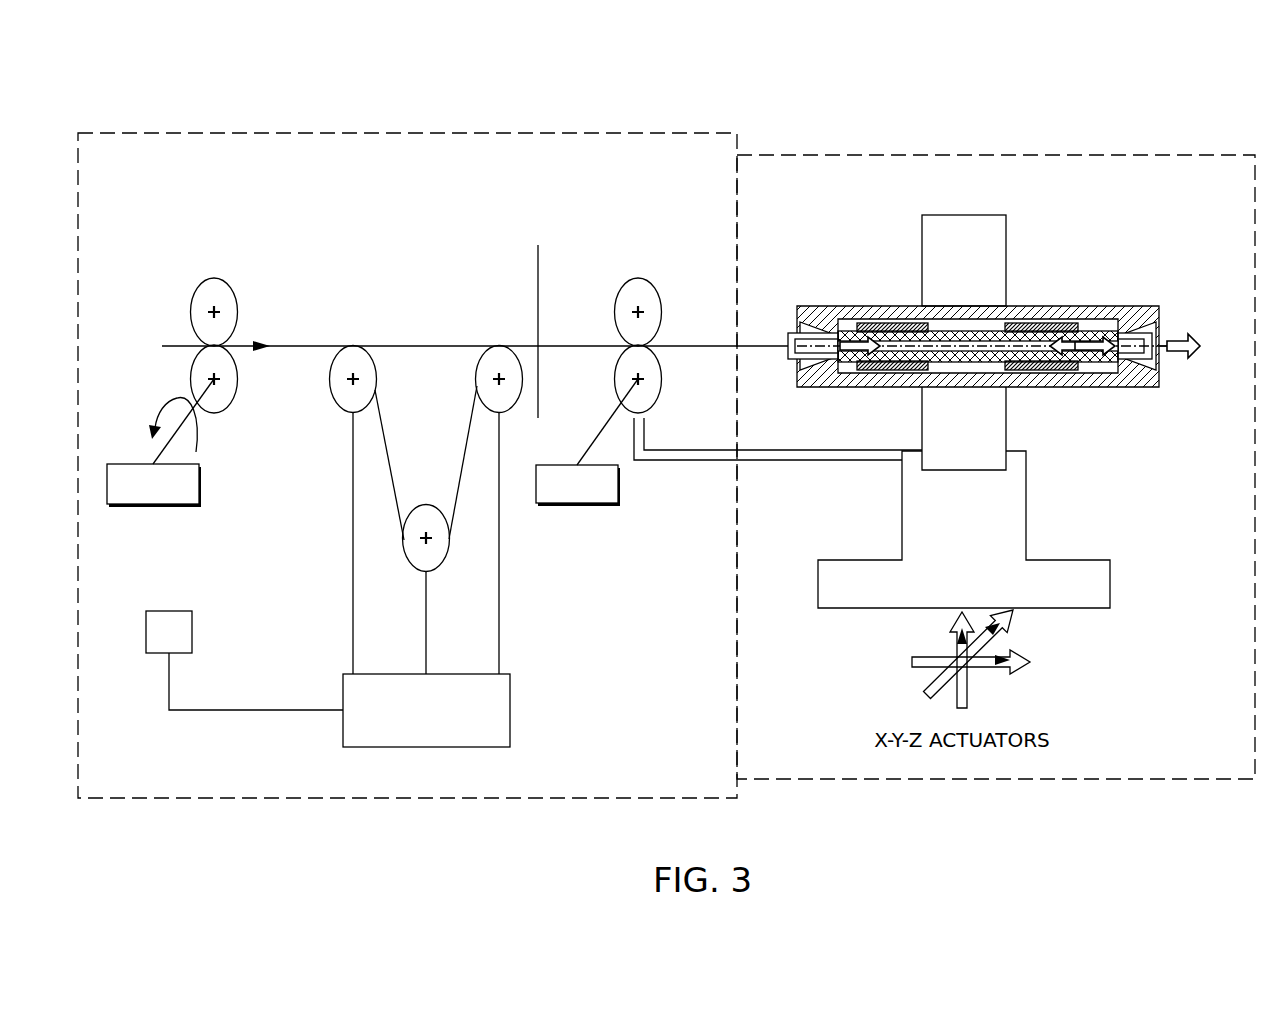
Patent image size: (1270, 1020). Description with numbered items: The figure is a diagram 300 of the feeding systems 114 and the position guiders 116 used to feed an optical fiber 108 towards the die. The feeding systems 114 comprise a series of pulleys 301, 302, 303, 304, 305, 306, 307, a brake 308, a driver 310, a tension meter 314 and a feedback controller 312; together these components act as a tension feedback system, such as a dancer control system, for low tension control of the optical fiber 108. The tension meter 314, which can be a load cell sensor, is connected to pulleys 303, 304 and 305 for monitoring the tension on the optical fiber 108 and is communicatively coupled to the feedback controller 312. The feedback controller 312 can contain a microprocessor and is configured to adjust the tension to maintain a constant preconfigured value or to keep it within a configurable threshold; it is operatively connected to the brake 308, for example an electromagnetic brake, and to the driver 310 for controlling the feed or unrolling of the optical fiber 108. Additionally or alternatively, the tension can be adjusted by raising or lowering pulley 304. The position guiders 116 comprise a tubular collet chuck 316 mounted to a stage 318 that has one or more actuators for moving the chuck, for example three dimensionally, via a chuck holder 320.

The diagram 300 is at (1108, 77).
The feeding systems 114 is at (337, 133).
The position guiders 116 is at (795, 155).
The optical fiber 108 is at (388, 428).
The pulley 301 is at (218, 413).
The pulley 302 is at (229, 287).
The pulley 303 is at (369, 351).
The pulley 304 is at (427, 505).
The pulley 305 is at (499, 346).
The pulley 306 is at (655, 351).
The pulley 307 is at (653, 288).
The brake 308 is at (201, 485).
The driver 310 is at (575, 504).
The feedback controller 312 is at (193, 632).
The tension meter 314 is at (343, 690).
The tubular collet chuck 316 is at (1048, 306).
The stage 318 is at (1027, 504).
The chuck holder 320 is at (1007, 230).